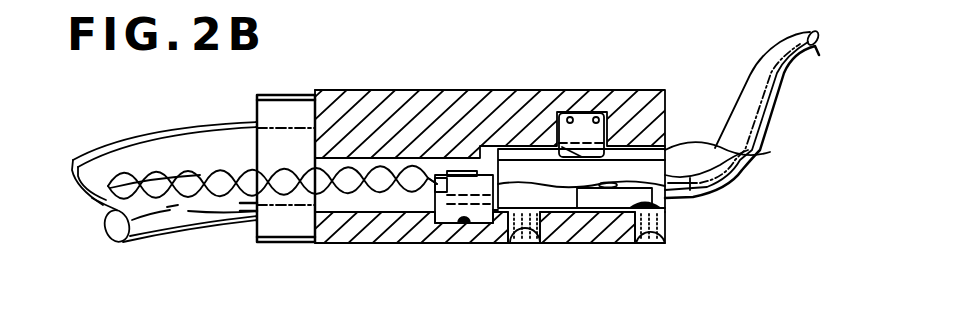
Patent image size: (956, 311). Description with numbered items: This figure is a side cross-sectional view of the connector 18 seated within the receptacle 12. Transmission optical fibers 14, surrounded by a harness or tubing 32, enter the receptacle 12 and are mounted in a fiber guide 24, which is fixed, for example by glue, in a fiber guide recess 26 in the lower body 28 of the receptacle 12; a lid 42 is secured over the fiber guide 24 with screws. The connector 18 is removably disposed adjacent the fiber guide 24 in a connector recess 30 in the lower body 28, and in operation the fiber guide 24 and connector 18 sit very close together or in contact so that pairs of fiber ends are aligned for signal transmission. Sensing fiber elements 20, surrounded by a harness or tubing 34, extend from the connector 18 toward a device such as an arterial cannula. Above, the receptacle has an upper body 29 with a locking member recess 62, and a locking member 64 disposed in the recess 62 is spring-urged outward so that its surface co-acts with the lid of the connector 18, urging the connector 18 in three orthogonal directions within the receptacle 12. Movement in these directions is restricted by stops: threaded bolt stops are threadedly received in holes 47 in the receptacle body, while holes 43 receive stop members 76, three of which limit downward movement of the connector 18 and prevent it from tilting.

The receptacle 12 is at (399, 90).
The transmission optical fibers 14 is at (213, 186).
The connector 18 is at (746, 152).
The sensing fiber elements 20 is at (670, 199).
The fiber guide 24 is at (413, 214).
The fiber guide recess 26 is at (462, 225).
The lower body 28 is at (330, 250).
The upper body 29 is at (357, 90).
The connector recess 30 is at (660, 222).
The harness or tubing 32 is at (128, 150).
The harness or tubing 34 is at (749, 78).
The lid 42 is at (444, 171).
The holes 43 is at (544, 246).
The holes 47 is at (490, 277).
The locking member recess 62 is at (598, 112).
The locking member 64 is at (567, 116).
The stop members 76 is at (522, 246).